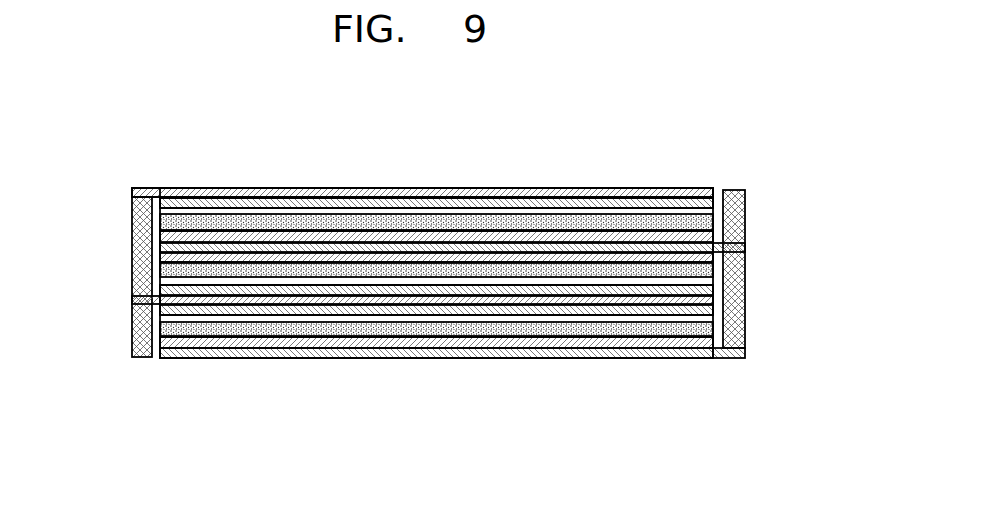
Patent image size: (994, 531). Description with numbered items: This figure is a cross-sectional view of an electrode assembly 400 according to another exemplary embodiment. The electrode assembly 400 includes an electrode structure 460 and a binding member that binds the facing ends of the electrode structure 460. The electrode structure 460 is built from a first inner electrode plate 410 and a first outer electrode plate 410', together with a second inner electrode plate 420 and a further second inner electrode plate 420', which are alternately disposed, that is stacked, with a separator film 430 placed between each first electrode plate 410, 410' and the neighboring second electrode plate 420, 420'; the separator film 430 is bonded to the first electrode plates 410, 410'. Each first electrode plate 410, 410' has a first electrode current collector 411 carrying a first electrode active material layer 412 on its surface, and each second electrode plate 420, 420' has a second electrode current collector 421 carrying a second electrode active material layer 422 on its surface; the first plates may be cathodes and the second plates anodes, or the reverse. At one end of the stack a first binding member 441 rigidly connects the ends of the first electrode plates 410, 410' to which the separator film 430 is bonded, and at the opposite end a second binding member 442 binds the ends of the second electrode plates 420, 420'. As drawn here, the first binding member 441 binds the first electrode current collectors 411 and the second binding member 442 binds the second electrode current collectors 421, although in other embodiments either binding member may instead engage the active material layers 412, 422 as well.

The electrode assembly 400 is at (752, 140).
The first inner electrode plate 410 is at (436, 175).
The first outer electrode plate 410' is at (436, 392).
The first electrode current collector 411 is at (326, 247).
The first electrode active material layer 412 is at (281, 234).
The second inner electrode plate 420 is at (436, 366).
The second inner electrode plate 420' is at (422, 147).
The second electrode current collector 421 is at (502, 192).
The second electrode active material layer 422 is at (561, 203).
The separator film 430 is at (669, 222).
The first binding member 441 is at (735, 221).
The second binding member 442 is at (140, 240).
The electrode structure 460 is at (165, 450).